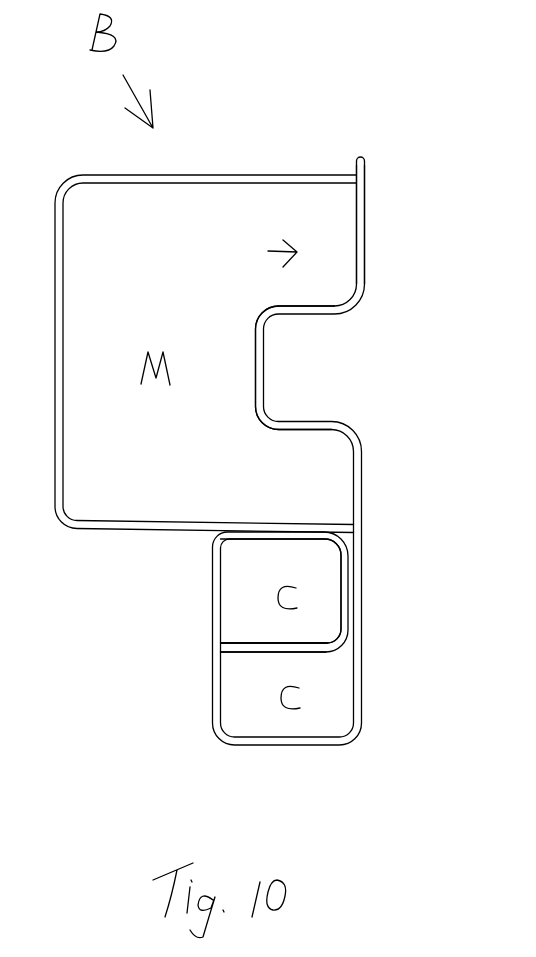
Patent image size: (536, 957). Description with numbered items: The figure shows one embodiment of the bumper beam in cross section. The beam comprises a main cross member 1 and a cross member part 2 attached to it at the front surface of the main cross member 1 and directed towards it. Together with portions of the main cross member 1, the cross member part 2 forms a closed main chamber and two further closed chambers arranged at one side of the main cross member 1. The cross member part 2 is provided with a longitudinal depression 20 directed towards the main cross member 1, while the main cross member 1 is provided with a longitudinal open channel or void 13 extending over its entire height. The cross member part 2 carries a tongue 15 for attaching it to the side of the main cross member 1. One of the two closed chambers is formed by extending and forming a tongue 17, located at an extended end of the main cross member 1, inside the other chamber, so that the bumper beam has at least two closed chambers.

The main cross member 1 is at (97, 534).
The cross member part 2 is at (363, 277).
The longitudinal open channel or void 13 is at (234, 265).
The tongue 15 is at (227, 592).
The tongue 17 is at (303, 643).
The longitudinal depression 20 is at (263, 377).